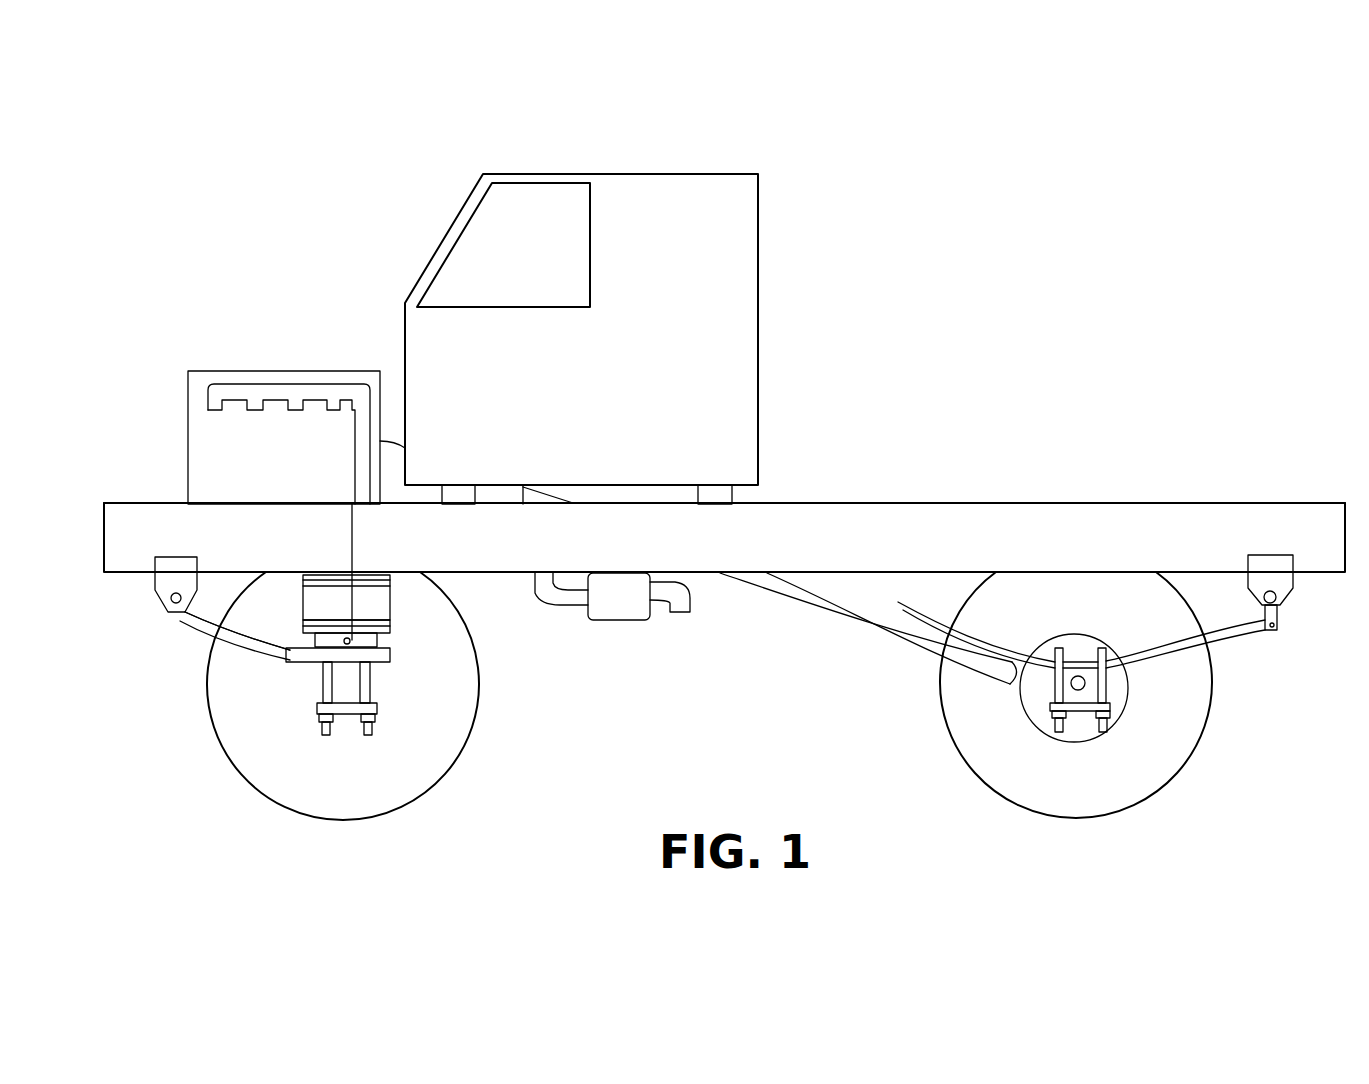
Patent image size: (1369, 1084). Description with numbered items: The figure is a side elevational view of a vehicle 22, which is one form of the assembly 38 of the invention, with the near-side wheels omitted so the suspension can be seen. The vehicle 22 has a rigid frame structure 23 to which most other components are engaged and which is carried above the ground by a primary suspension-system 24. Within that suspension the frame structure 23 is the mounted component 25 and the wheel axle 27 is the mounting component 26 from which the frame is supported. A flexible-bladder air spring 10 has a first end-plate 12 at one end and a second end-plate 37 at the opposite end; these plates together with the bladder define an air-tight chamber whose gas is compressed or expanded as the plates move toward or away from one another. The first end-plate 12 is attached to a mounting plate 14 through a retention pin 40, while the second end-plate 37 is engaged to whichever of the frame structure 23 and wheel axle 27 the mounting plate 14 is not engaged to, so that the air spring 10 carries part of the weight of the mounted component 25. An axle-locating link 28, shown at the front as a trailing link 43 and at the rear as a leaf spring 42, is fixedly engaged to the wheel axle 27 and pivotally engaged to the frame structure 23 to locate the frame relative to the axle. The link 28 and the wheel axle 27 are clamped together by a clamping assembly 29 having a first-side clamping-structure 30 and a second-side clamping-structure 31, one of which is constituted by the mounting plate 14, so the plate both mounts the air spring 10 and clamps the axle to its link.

The flexible-bladder air spring 10 is at (375, 604).
The first end-plate 12 is at (387, 636).
The mounting plate 14 is at (237, 640).
The vehicle 22 is at (794, 302).
The frame structure 23 is at (818, 532).
The primary suspension-system 24 is at (316, 597).
The mounted component 25 is at (176, 522).
The mounting component 26 is at (352, 678).
The wheel axle 27 is at (340, 692).
The axle-locating link 28 is at (247, 648).
The clamping assembly 29 is at (340, 735).
The first-side clamping-structure 30 is at (390, 655).
The second-side clamping-structure 31 is at (333, 642).
The second end-plate 37 is at (343, 577).
The assembly 38 is at (885, 307).
The retention pin 40 is at (352, 503).
The leaf spring 42 is at (938, 637).
The trailing link 43 is at (206, 652).